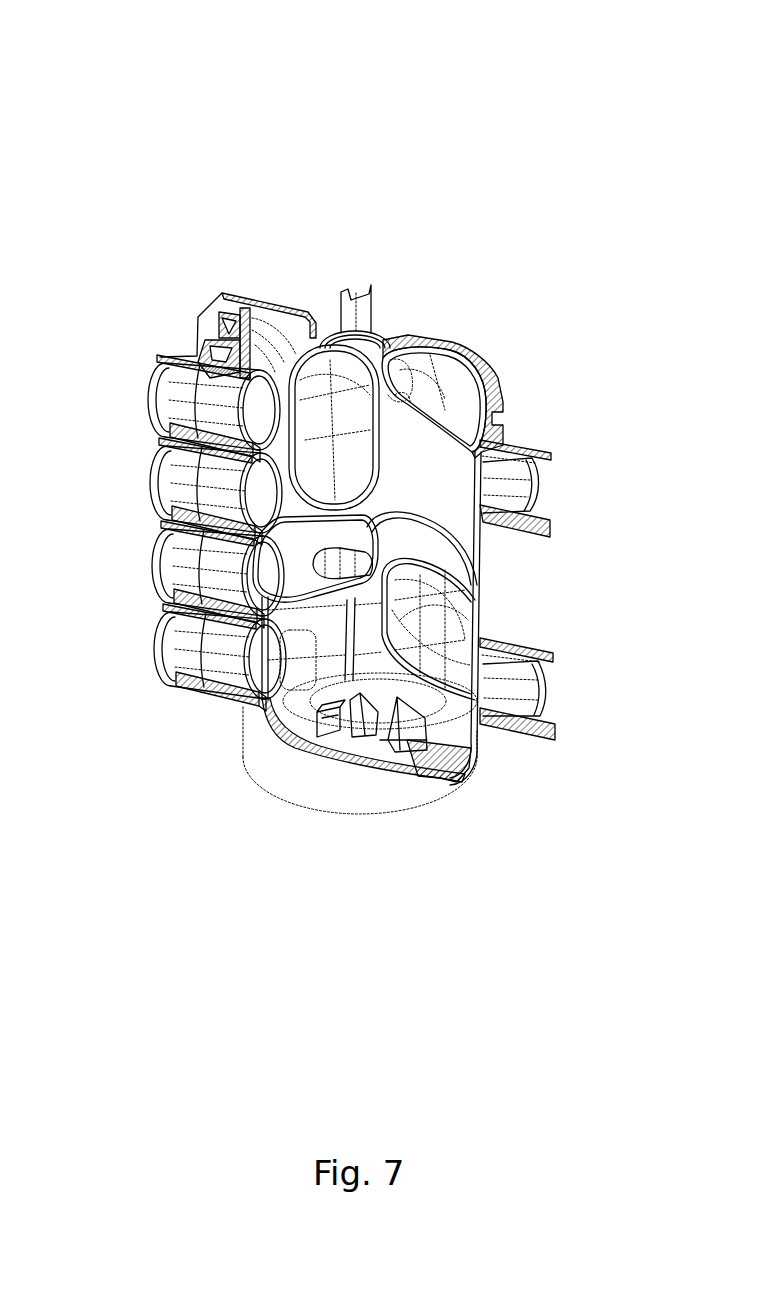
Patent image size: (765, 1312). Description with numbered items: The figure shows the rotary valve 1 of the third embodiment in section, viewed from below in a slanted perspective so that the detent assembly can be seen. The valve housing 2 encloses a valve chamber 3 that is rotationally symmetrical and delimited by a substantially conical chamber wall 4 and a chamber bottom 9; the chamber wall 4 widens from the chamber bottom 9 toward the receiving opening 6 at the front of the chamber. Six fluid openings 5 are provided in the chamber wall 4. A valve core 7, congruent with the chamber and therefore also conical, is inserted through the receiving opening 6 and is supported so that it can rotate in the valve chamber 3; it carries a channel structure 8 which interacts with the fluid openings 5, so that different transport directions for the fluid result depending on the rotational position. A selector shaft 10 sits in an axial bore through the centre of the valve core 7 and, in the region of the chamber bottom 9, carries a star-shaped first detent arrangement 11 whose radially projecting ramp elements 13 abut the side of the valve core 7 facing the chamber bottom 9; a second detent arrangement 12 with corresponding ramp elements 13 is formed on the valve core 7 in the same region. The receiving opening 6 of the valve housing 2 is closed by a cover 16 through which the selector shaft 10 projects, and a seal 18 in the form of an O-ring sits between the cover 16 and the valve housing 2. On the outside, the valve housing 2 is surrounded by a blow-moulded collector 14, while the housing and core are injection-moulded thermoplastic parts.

The rotary valve 1 is at (497, 142).
The valve housing 2 is at (230, 357).
The valve chamber 3 is at (456, 487).
The chamber wall 4 is at (480, 553).
The fluid openings 5 is at (528, 688).
The receiving opening 6 is at (281, 332).
The valve core 7 is at (332, 652).
The channel structure 8 is at (280, 575).
The chamber bottom 9 is at (318, 762).
The selector shaft 10 is at (350, 307).
The first detent arrangement 11 is at (407, 717).
The second detent arrangement 12 is at (417, 747).
The ramp elements 13 is at (317, 717).
The collector 14 is at (460, 773).
The cover 16 is at (455, 352).
The seal 18 is at (224, 323).